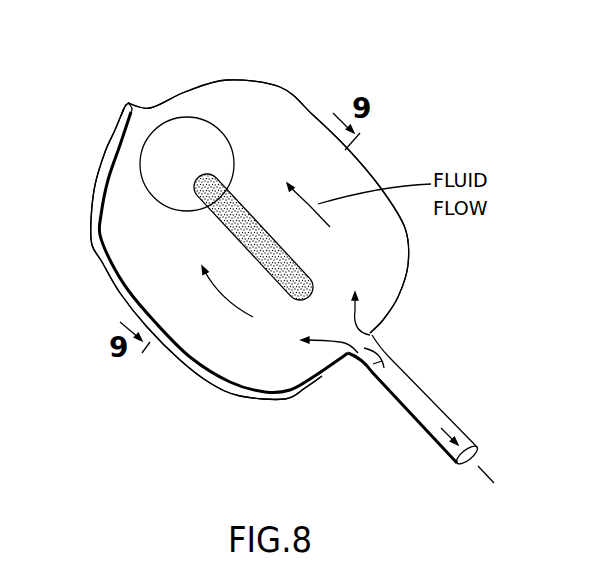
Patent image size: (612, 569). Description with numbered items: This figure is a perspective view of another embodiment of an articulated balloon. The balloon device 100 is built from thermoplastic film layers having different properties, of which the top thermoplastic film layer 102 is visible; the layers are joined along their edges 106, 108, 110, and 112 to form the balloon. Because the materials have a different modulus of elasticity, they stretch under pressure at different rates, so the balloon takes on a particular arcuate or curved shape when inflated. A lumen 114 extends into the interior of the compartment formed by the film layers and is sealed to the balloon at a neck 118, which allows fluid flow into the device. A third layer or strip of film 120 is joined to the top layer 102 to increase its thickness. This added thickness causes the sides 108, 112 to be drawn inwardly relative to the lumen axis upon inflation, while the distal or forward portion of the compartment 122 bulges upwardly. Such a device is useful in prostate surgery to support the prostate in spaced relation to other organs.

The balloon device 100 is at (182, 410).
The thermoplastic film layer 102 is at (127, 182).
The edge 106 is at (356, 171).
The side 108 is at (303, 366).
The edge 110 is at (140, 275).
The side 112 is at (127, 137).
The lumen 114 is at (455, 428).
The neck 118 is at (371, 333).
The strip of film 120 is at (223, 197).
The distal portion of the compartment 122 is at (197, 127).